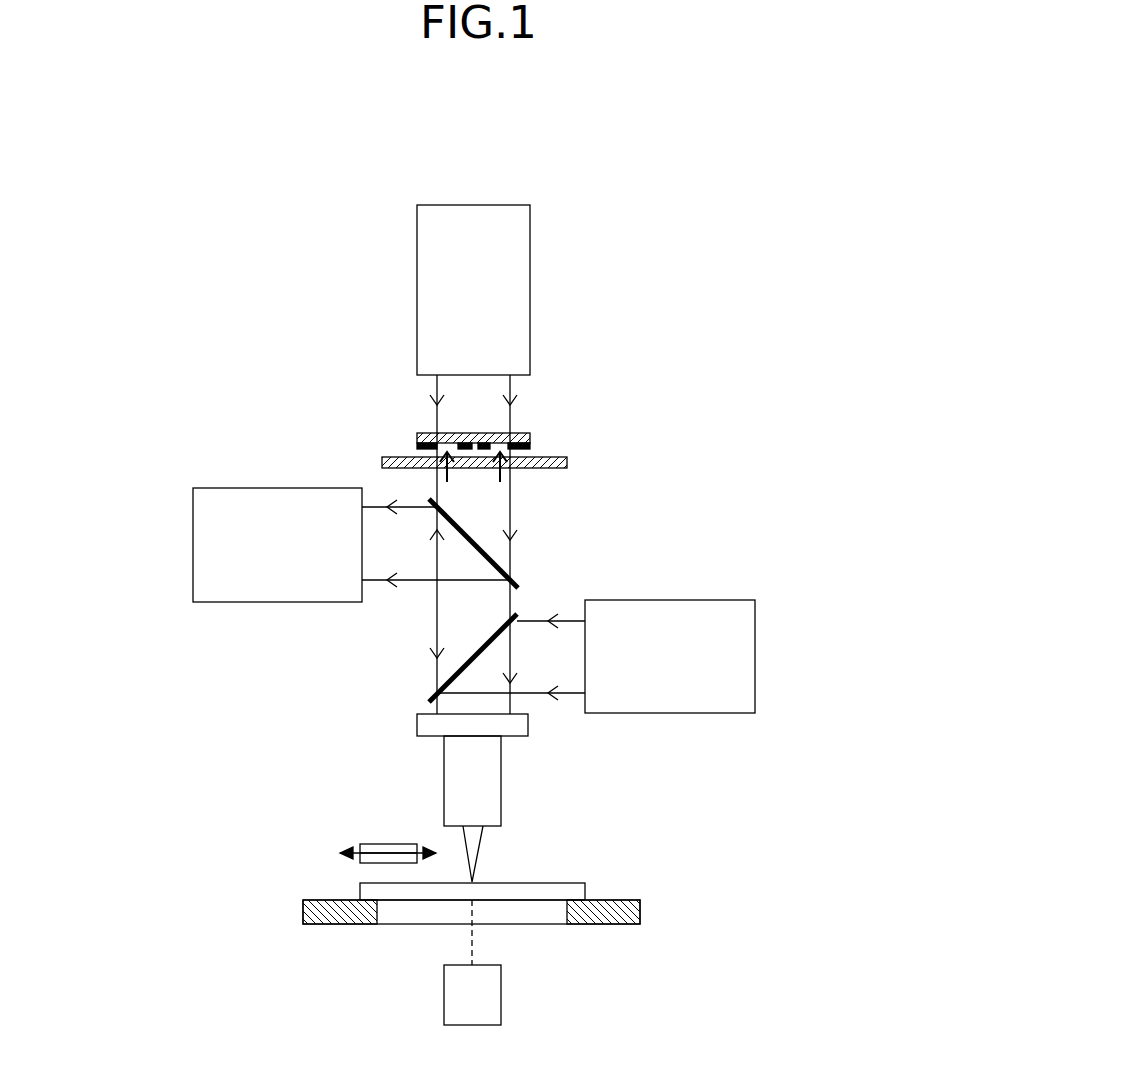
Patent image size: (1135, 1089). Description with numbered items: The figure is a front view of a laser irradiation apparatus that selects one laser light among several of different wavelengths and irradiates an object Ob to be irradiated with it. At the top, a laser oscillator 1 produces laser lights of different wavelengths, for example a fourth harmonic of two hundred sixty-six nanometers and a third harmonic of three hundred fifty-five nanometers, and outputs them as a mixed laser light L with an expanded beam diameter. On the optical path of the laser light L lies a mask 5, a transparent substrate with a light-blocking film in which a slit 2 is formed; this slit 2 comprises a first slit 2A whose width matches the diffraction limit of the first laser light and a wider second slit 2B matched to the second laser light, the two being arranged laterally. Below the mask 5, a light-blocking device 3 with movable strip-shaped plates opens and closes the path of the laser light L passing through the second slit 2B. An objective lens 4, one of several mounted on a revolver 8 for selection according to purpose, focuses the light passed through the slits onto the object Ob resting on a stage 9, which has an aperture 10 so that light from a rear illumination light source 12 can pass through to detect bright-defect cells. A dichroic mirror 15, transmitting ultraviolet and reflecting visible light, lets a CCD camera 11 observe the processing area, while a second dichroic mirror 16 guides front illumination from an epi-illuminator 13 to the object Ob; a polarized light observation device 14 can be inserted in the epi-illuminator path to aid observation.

The laser oscillator 1 is at (463, 228).
The slit 2 is at (535, 438).
The first slit 2A is at (466, 431).
The second slit 2B is at (447, 468).
The light-blocking device 3 is at (380, 464).
The objective lens 4 is at (493, 767).
The mask 5 is at (428, 438).
The revolver 8 is at (417, 722).
The stage 9 is at (640, 912).
The aperture 10 is at (430, 929).
The CCD camera 11 is at (274, 583).
The rear illumination light source 12 is at (477, 995).
The epi-illuminator 13 is at (677, 618).
The polarized light observation device 14 is at (378, 844).
The dichroic mirror 15 is at (490, 560).
The dichroic mirror 16 is at (477, 657).
The laser light L is at (463, 392).
The object to be irradiated Ob is at (560, 892).